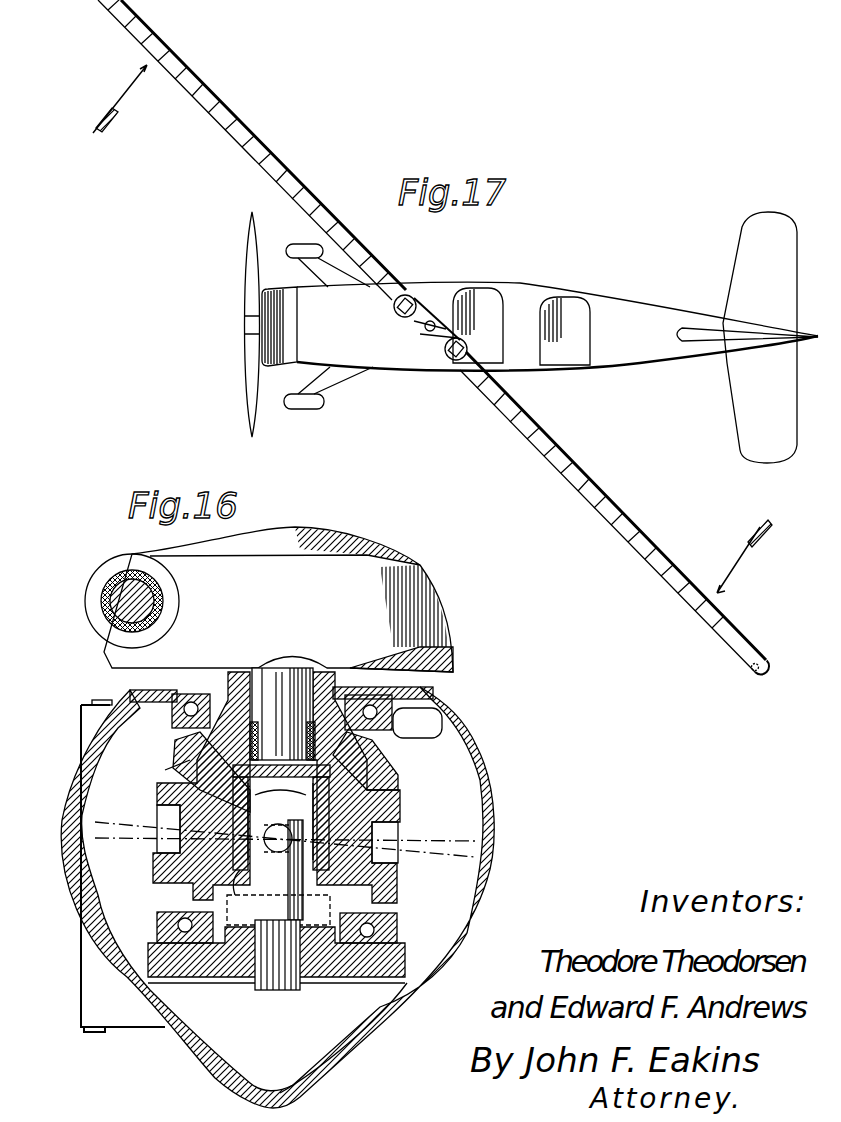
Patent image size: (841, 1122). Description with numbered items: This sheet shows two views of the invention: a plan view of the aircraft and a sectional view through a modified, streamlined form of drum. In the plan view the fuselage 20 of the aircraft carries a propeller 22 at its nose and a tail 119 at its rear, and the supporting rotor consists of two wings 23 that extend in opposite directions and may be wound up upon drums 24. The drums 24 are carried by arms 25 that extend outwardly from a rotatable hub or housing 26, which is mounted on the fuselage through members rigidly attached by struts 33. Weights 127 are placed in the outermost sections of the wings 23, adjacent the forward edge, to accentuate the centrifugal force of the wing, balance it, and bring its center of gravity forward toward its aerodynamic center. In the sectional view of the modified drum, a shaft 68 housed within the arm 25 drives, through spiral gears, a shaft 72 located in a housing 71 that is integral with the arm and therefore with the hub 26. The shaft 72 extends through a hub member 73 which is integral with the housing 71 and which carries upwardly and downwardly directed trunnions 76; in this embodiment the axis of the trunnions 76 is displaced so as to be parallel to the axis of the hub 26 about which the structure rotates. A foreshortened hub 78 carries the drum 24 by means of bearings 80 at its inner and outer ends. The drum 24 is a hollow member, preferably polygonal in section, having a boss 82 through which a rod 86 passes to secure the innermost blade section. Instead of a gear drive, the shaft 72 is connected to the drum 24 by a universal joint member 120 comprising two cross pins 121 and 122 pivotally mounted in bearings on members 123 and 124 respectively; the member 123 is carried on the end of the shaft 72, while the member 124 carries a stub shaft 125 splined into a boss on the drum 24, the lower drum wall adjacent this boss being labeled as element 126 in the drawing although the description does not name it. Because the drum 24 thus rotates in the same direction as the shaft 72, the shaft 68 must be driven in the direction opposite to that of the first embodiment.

In FIG. 17, the fuselage 20 is at (612, 356).
In FIG. 17, the propeller 22 is at (249, 280).
In FIG. 17, the wings 23 is at (268, 156).
In FIG. 17, the drum 24 is at (396, 311).
In FIG. 16, the drum 24 is at (492, 786).
In FIG. 17, the arms 25 is at (452, 300).
In FIG. 16, the arms 25 is at (112, 616).
In FIG. 17, the rotatable hub or housing 26 is at (428, 330).
In FIG. 17, the struts 33 is at (416, 323).
In FIG. 17, the tail 119 is at (744, 278).
In FIG. 17, the weights 127 is at (104, 7).
In FIG. 16, the shaft 68 is at (112, 594).
In FIG. 16, the housing 71 is at (432, 605).
In FIG. 16, the shaft 72 is at (278, 680).
In FIG. 16, the hub member 73 is at (228, 748).
In FIG. 16, the trunnions 76 is at (285, 834).
In FIG. 16, the hub 78 is at (182, 768).
In FIG. 16, the bearings 80 is at (192, 702).
In FIG. 16, the boss 82 is at (100, 963).
In FIG. 16, the rod 86 is at (100, 698).
In FIG. 16, the universal joint member 120 is at (330, 795).
In FIG. 16, the cross pin 121 is at (235, 881).
In FIG. 16, the cross pin 122 is at (278, 852).
In FIG. 16, the member 123 is at (281, 774).
In FIG. 16, the member 124 is at (303, 874).
In FIG. 16, the stub shaft 125 is at (275, 988).
In FIG. 16, the bottom plate 126 is at (235, 940).